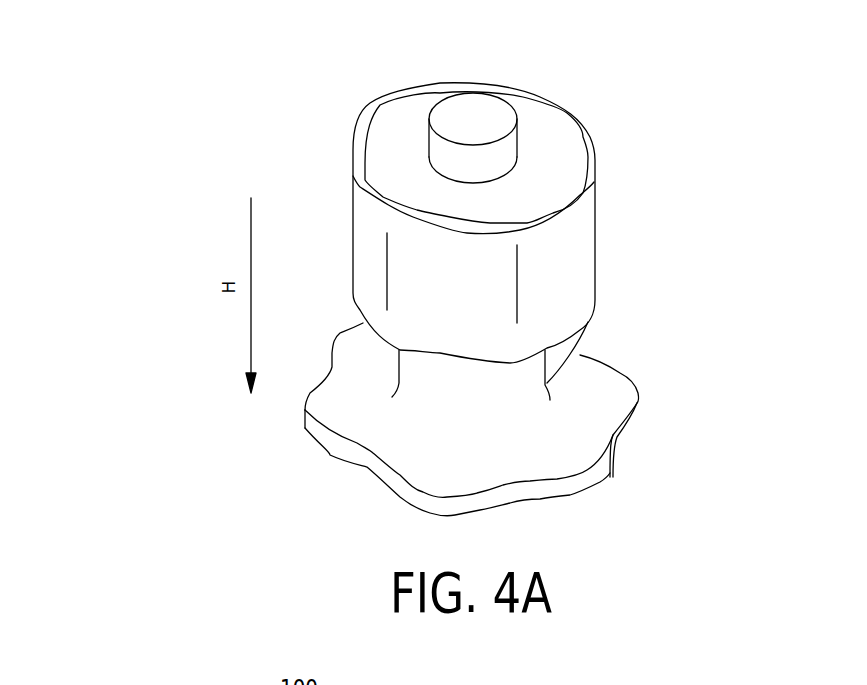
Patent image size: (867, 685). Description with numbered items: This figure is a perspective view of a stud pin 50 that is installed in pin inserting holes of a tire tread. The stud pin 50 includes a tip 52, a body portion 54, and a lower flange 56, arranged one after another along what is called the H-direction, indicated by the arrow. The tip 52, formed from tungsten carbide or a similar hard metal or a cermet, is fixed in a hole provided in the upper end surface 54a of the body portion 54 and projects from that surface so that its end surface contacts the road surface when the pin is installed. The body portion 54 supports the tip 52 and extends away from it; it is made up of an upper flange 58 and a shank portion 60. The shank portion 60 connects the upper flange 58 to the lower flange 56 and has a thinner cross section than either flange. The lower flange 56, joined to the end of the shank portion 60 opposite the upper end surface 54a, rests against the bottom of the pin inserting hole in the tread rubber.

The stud pin 50 is at (572, 57).
The tip 52 is at (487, 117).
The body portion 54 is at (632, 282).
The upper end surface 54a is at (563, 143).
The lower flange 56 is at (605, 422).
The upper flange 58 is at (550, 310).
The shank portion 60 is at (560, 343).